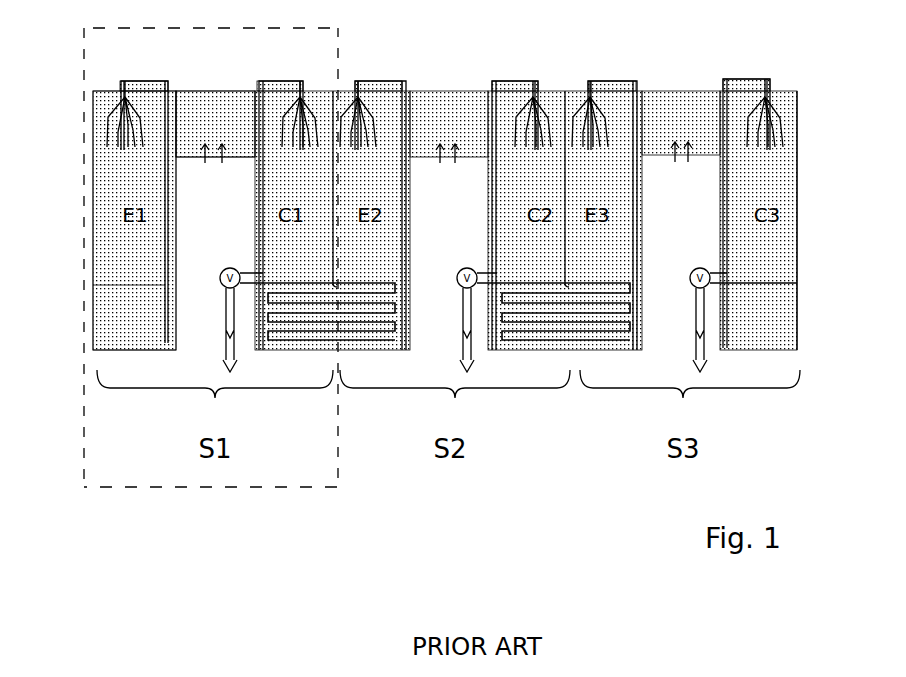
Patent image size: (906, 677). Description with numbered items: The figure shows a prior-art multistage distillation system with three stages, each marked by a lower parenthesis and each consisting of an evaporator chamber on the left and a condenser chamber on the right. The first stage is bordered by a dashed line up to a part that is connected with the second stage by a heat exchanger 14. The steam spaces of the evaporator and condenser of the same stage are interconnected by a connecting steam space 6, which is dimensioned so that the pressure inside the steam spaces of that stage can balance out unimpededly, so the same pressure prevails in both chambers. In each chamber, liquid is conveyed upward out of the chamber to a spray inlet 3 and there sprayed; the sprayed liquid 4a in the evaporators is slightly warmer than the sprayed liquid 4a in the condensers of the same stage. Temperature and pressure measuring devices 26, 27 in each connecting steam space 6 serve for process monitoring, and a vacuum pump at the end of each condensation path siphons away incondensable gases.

The sprayed liquid 4a is at (103, 130).
The connecting steam space 6 is at (213, 117).
The spray inlet 3 is at (303, 93).
The temperature and pressure measuring device 26 is at (204, 165).
The temperature and pressure measuring device 27 is at (222, 165).
The heat exchanger 14 is at (337, 325).